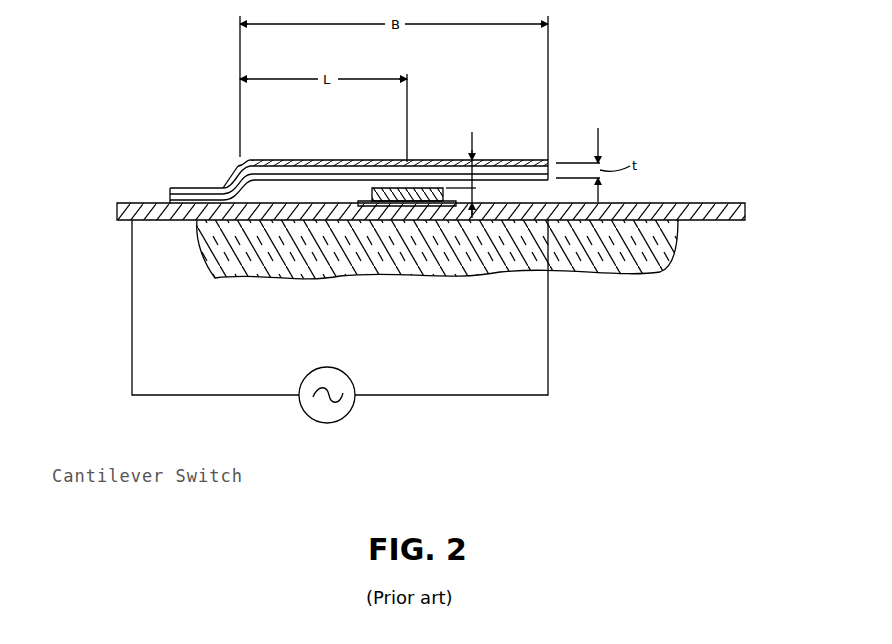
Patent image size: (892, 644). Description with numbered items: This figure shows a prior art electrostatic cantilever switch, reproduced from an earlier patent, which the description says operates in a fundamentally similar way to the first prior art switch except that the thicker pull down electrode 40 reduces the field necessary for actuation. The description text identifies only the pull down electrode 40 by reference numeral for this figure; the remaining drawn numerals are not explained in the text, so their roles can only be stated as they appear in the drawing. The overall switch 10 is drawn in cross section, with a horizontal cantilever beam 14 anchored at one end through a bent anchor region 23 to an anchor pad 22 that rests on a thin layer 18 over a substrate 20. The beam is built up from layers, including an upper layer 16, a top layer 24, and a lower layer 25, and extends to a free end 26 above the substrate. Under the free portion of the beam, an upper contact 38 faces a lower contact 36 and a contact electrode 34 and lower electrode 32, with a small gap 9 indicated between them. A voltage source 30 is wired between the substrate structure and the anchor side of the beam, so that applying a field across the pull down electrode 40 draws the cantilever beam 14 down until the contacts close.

The gap height 9 is at (478, 172).
The cantilever switch 10 is at (178, 76).
The cantilever beam 14 is at (315, 160).
The upper beam layer 16 is at (430, 160).
The dielectric layer 18 is at (590, 222).
The substrate 20 is at (216, 266).
The anchor pad 22 is at (176, 190).
The anchor bend 23 is at (265, 162).
The beam top layer 24 is at (368, 162).
The beam bottom layer 25 is at (287, 176).
The free end of beam 26 is at (541, 160).
The AC voltage source 30 is at (325, 367).
The lower electrode 32 is at (520, 222).
The contact electrode 34 is at (487, 212).
The lower contact 36 is at (376, 207).
The upper contact 38 is at (342, 203).
The pull down electrode 40 is at (406, 208).